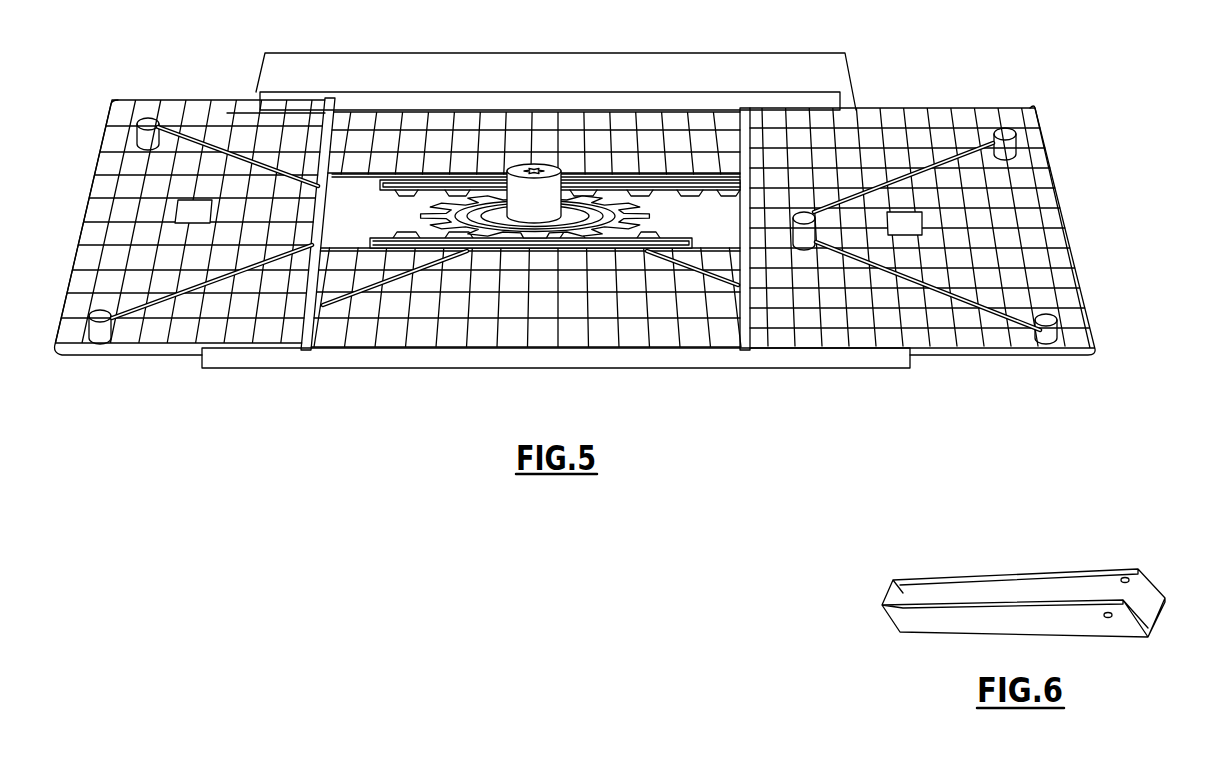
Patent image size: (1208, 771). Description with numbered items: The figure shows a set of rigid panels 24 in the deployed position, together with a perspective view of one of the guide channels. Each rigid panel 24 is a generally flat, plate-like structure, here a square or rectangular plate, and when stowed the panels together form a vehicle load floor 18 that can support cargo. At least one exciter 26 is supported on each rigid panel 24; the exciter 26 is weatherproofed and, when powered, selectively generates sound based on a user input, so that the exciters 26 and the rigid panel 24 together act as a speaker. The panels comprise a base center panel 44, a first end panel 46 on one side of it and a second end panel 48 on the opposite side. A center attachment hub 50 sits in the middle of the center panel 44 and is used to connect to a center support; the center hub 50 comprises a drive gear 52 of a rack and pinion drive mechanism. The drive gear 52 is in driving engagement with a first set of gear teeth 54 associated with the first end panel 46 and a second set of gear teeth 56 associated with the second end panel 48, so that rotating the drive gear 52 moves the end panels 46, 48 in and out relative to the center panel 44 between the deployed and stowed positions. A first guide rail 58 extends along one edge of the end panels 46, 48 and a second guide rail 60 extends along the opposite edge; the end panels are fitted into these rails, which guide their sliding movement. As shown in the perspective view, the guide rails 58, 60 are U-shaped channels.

In FIG. 5, the vehicle load floor 18 is at (120, 357).
In FIG. 5, the rigid panel 24 is at (905, 98).
In FIG. 5, the exciter 26 is at (188, 213).
In FIG. 5, the center panel 44 is at (634, 342).
In FIG. 5, the first end panel 46 is at (168, 117).
In FIG. 5, the second end panel 48 is at (1038, 177).
In FIG. 5, the center attachment hub 50 is at (545, 164).
In FIG. 5, the drive gear 52 is at (500, 232).
In FIG. 5, the first set of gear teeth 54 is at (368, 226).
In FIG. 5, the second set of gear teeth 56 is at (672, 196).
In FIG. 5, the first guide rail 58 is at (833, 98).
In FIG. 6, the first guide rail 58 is at (1094, 556).
In FIG. 5, the second guide rail 60 is at (884, 361).
In FIG. 6, the second guide rail 60 is at (1038, 560).